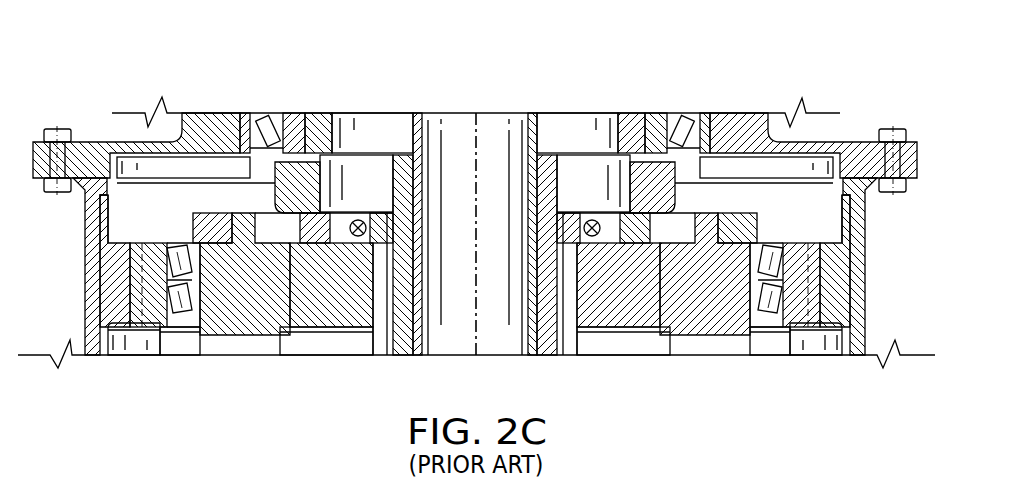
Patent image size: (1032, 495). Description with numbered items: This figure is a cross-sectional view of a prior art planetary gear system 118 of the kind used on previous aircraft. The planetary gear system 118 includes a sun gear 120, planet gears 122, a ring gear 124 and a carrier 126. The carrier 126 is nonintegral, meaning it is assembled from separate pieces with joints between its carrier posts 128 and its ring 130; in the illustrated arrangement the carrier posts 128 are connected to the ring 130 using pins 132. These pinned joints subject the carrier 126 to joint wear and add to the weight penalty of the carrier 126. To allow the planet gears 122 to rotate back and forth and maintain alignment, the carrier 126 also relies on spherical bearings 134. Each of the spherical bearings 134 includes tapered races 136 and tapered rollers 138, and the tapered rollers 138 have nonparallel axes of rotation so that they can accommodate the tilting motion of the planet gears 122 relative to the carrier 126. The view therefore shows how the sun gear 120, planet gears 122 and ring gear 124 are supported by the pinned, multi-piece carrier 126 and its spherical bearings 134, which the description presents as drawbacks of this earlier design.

The planetary gear system 118 is at (102, 56).
The sun gear 120 is at (374, 309).
The planet gears 122 is at (152, 323).
The ring gear 124 is at (130, 264).
The carrier 126 is at (262, 197).
The carrier posts 128 is at (233, 332).
The ring 130 is at (668, 183).
The pins 132 is at (230, 225).
The spherical bearings 134 is at (763, 330).
The tapered races 136 is at (747, 283).
The tapered rollers 138 is at (646, 310).